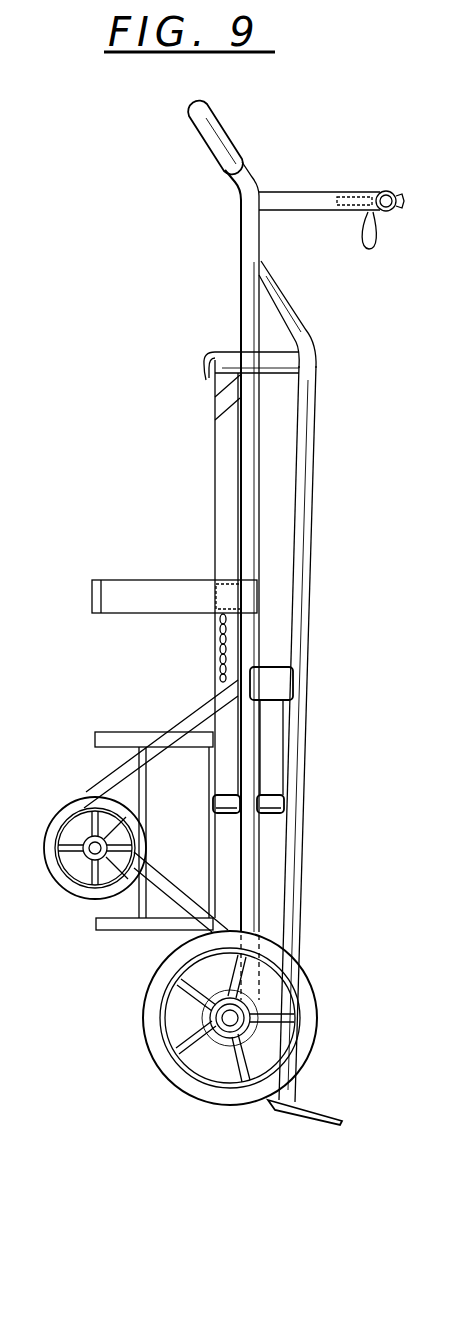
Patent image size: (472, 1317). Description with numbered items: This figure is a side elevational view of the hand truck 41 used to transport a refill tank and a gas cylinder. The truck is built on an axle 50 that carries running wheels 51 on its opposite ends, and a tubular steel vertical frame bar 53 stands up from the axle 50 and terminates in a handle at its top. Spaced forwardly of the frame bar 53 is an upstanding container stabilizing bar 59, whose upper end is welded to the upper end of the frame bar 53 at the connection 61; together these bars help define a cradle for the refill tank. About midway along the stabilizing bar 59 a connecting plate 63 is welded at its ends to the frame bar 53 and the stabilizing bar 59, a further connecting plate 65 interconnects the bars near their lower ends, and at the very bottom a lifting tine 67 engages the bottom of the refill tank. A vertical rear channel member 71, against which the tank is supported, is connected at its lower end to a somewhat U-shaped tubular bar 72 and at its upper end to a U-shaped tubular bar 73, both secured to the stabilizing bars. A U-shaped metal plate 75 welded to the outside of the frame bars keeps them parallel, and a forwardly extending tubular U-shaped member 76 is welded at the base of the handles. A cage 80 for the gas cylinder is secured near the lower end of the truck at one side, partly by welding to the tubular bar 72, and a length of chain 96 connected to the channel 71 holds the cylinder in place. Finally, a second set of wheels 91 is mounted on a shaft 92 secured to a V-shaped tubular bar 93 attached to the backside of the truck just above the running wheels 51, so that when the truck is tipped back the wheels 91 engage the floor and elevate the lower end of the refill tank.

The hand truck 41 is at (318, 369).
The axle 50 is at (229, 1027).
The running wheels 51 is at (227, 1106).
The vertical frame bar 53 is at (248, 444).
The container stabilizing bar 59 is at (305, 432).
The weld connection 61 is at (264, 264).
The connecting plate 63 is at (272, 678).
The connecting plate 65 is at (265, 985).
The lifting tine 67 is at (312, 1104).
The vertical rear channel member 71 is at (228, 513).
The tubular bar 72 is at (268, 795).
The U-shaped tubular bar 73 is at (275, 358).
The U-shaped metal plate 75 is at (147, 601).
The tubular U-shaped member 76 is at (315, 194).
The cage 80 is at (118, 731).
The second set of wheels 91 is at (55, 868).
The shaft 92 is at (86, 878).
The V-shaped tubular bar 93 is at (105, 780).
The chain 96 is at (222, 645).